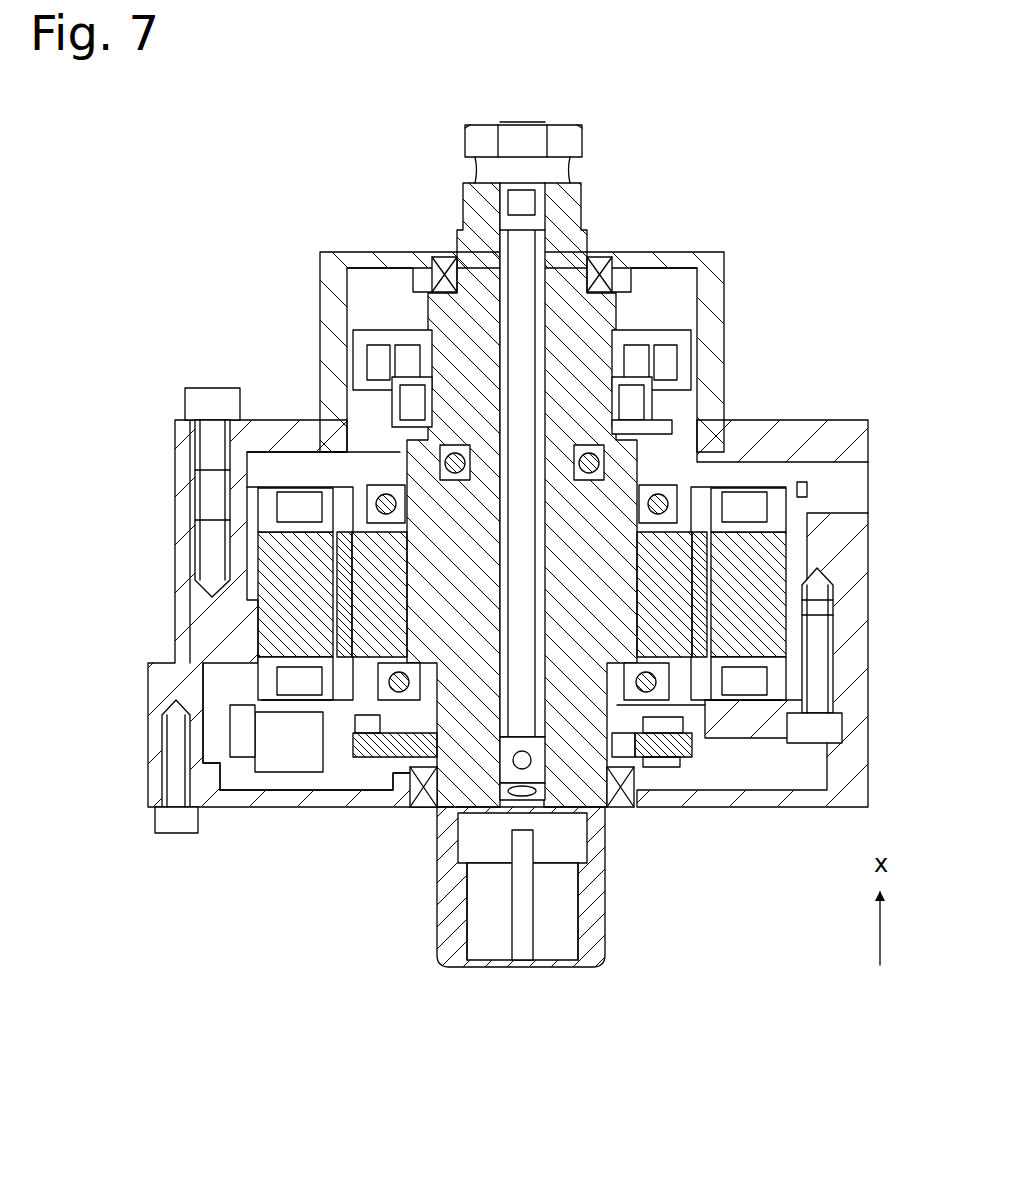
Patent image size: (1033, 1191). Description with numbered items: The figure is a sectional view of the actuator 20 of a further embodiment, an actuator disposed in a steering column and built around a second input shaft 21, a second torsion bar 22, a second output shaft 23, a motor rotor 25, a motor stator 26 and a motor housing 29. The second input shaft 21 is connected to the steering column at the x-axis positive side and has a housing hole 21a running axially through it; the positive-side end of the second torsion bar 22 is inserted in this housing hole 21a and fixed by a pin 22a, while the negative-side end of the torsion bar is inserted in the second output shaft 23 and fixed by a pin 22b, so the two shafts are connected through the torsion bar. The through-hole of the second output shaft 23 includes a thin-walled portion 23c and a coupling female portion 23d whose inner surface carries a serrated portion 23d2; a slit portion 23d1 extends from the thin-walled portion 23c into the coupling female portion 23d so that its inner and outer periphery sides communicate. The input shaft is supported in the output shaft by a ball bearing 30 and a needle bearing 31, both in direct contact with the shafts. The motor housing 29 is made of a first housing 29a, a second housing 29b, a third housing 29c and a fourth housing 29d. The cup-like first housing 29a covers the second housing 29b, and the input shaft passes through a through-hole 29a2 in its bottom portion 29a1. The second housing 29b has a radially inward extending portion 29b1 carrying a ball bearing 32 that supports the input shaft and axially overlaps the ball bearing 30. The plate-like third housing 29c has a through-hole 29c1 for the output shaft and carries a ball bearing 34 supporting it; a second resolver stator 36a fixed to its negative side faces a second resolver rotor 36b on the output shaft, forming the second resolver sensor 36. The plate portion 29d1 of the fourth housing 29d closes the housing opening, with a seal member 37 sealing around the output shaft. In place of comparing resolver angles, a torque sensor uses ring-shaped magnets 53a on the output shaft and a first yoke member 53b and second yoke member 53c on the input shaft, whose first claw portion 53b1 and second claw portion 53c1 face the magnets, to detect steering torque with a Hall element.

The actuator 20 is at (670, 436).
The second input shaft 21 is at (568, 240).
The housing hole 21a is at (537, 200).
The second torsion bar 22 is at (545, 590).
The pin 22a is at (520, 170).
The pin 22b is at (522, 890).
The second output shaft 23 is at (525, 922).
The thin-walled portion 23c is at (463, 835).
The coupling female portion 23d is at (480, 905).
The slit portion 23d1 is at (540, 890).
The serrated portion 23d2 is at (472, 960).
The motor rotor 25 is at (345, 598).
The motor stator 26 is at (272, 548).
The motor housing 29 is at (494, 550).
The first housing 29a is at (456, 314).
The bottom portion 29a1 is at (703, 258).
The through-hole 29a2 is at (440, 272).
The second housing 29b is at (244, 597).
The extending portion 29b1 is at (300, 470).
The third housing 29c is at (776, 712).
The through-hole 29c1 is at (228, 700).
The fourth housing 29d is at (248, 793).
The plate portion 29d1 is at (320, 800).
The ball bearing 30 is at (600, 458).
The needle bearing 31 is at (640, 688).
The ball bearing 32 is at (690, 500).
The ball bearing 34 is at (840, 722).
The second resolver sensor 36 is at (668, 809).
The second resolver stator 36a is at (665, 755).
The second resolver rotor 36b is at (640, 760).
The seal member 37 is at (415, 795).
The magnets 53a is at (642, 410).
The first yoke member 53b is at (662, 347).
The first claw portion 53b1 is at (650, 385).
The second yoke member 53c is at (380, 345).
The second claw portion 53c1 is at (400, 395).